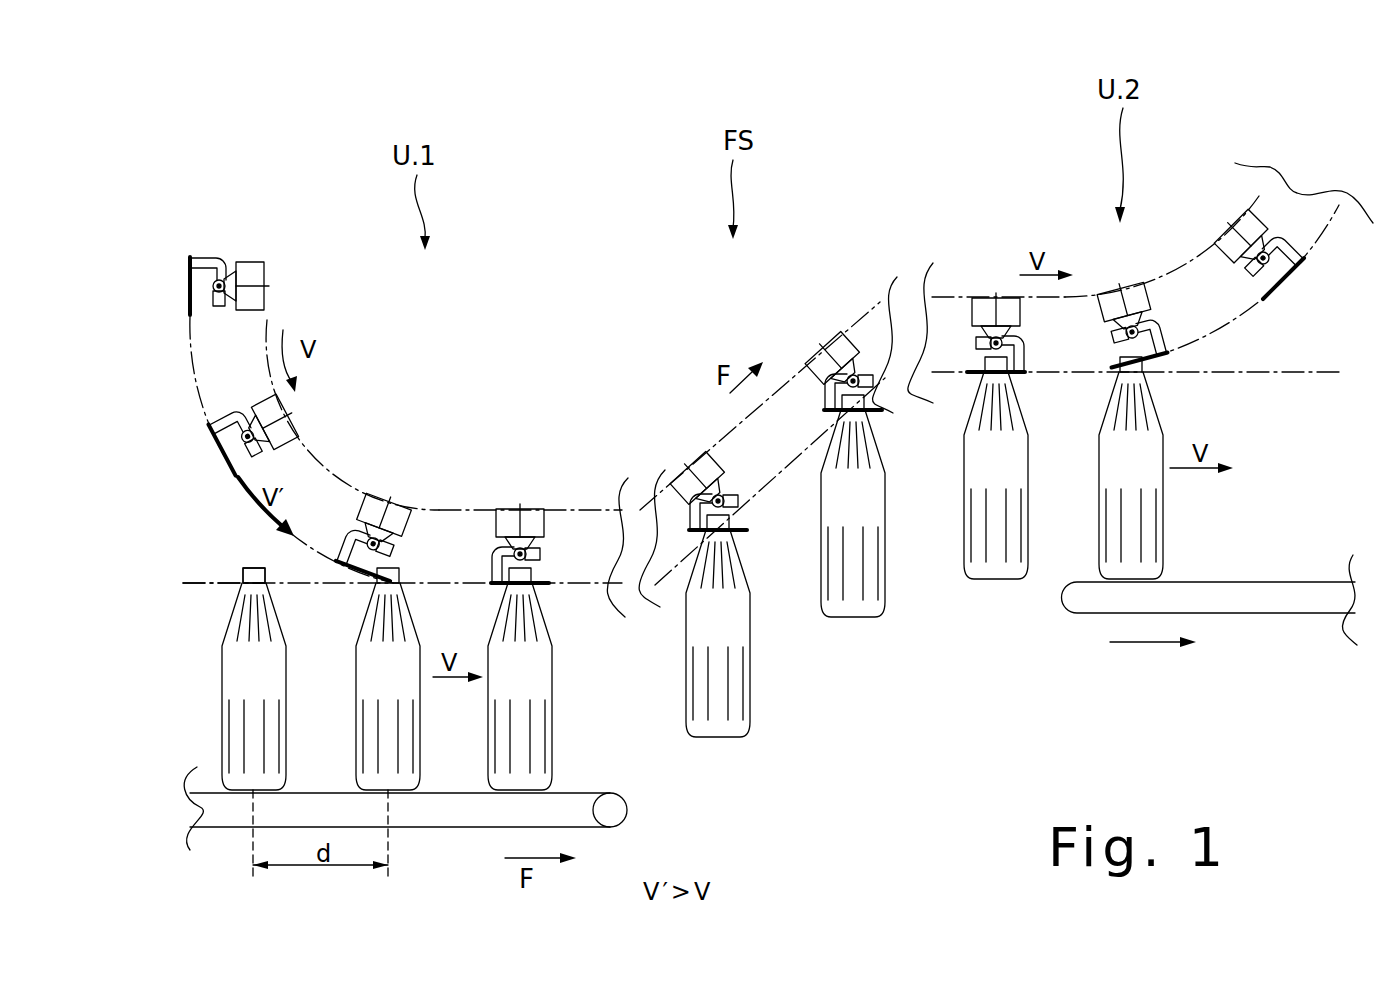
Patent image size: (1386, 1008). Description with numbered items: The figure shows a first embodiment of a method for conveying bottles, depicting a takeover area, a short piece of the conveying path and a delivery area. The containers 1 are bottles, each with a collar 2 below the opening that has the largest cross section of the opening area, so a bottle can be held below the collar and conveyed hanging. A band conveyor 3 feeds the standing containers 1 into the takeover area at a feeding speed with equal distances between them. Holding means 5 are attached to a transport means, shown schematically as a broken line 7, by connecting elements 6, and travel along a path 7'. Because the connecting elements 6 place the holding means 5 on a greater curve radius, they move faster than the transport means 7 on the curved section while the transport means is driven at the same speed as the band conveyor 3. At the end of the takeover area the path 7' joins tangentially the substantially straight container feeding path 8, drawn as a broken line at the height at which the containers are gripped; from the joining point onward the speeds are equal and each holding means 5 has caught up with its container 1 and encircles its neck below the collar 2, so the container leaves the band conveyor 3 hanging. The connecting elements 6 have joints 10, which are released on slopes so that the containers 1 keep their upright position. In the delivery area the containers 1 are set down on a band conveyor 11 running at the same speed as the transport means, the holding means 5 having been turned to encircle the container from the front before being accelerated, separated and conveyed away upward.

The container 1 is at (248, 673).
The collar 2 is at (243, 580).
The band conveyor 3 is at (598, 790).
The holding means 5 is at (186, 302).
The connecting element 6 is at (756, 407).
The transport means 7 is at (352, 415).
The path of the holding means 7' is at (258, 450).
The container feeding path 8 is at (208, 587).
The joint 10 is at (862, 345).
The band conveyor 11 is at (1290, 582).